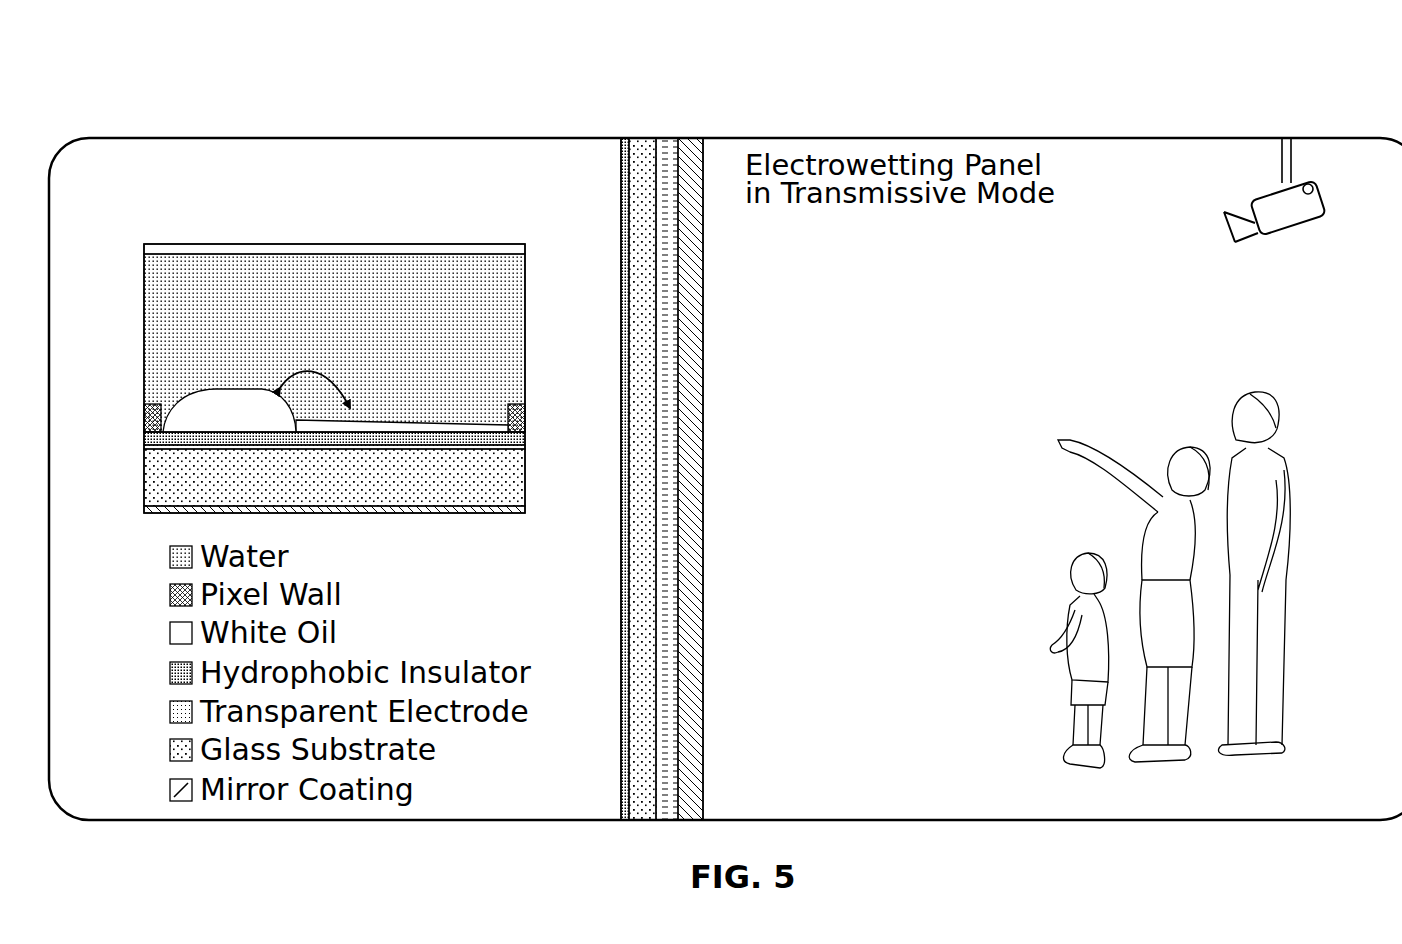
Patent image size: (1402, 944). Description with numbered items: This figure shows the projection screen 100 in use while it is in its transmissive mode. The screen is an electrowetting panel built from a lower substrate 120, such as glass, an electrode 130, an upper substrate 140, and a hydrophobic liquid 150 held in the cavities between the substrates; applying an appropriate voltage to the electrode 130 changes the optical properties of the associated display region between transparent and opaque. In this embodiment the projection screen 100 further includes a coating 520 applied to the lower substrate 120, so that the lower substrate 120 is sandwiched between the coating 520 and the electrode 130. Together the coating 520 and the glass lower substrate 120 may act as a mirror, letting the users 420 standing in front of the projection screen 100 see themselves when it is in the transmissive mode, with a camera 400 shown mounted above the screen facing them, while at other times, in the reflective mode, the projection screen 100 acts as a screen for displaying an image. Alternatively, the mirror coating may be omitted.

The projection screen 100 is at (684, 177).
The lower substrate 120 is at (640, 160).
The electrode 130 is at (660, 270).
The upper substrate 140 is at (437, 250).
The hydrophobic liquid 150 is at (228, 410).
The camera 400 is at (1297, 228).
The viewers 420 is at (1187, 392).
The coating 520 is at (620, 176).